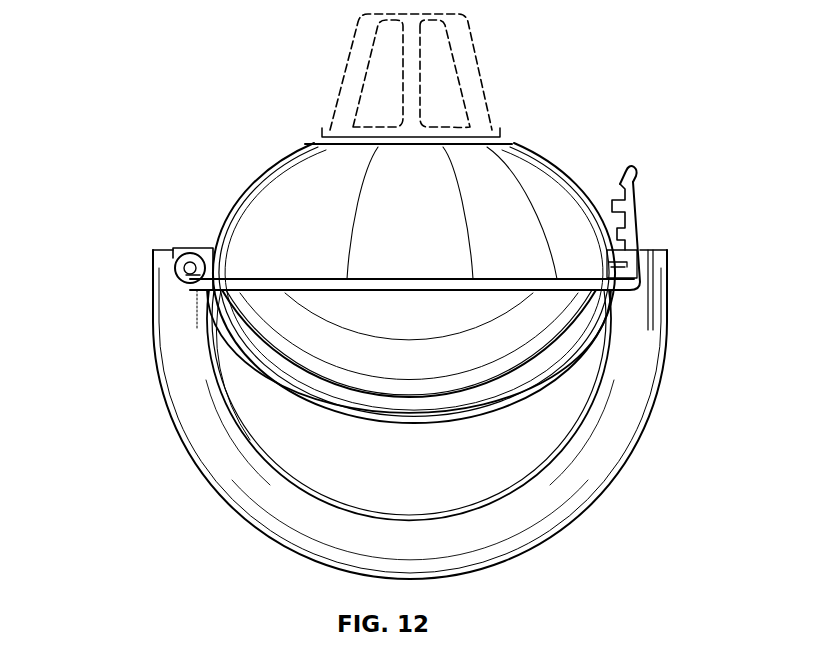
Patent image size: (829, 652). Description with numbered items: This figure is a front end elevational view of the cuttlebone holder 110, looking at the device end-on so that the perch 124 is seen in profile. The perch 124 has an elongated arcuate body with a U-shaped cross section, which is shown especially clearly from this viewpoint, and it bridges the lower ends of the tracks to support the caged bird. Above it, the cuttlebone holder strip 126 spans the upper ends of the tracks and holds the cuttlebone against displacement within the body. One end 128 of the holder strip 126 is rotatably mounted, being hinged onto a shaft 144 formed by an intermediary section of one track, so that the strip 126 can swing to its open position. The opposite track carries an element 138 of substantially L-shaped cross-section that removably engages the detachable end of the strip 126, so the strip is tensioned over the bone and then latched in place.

The holder 110 is at (141, 559).
The perch 124 is at (635, 333).
The cuttlebone holder strip 126 is at (380, 283).
The end of holder strip 128 is at (187, 258).
The element 138 is at (193, 290).
The shaft 144 is at (213, 253).